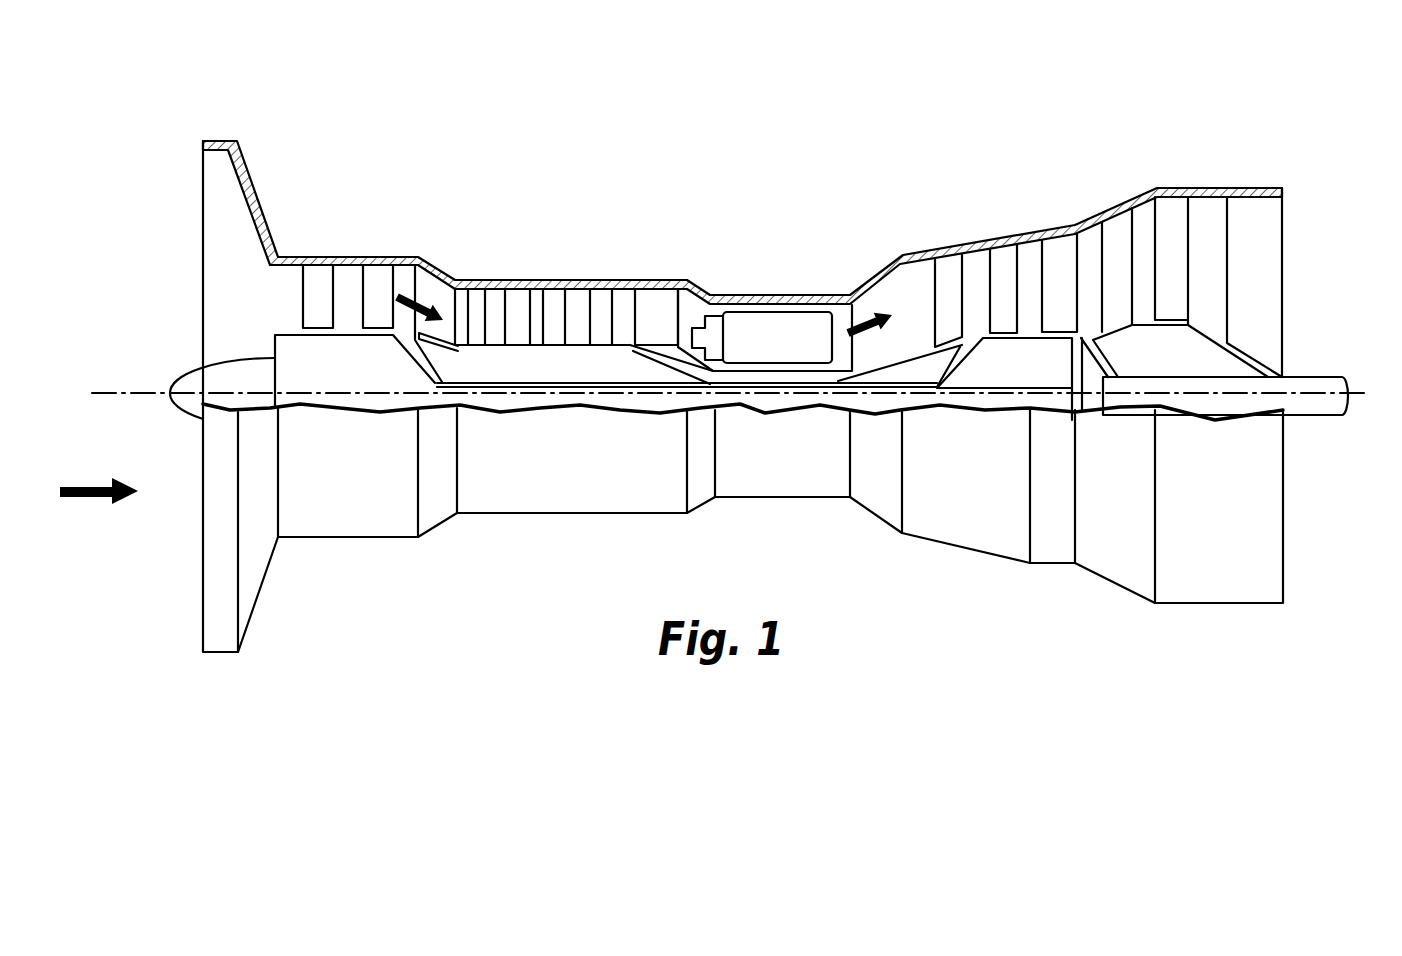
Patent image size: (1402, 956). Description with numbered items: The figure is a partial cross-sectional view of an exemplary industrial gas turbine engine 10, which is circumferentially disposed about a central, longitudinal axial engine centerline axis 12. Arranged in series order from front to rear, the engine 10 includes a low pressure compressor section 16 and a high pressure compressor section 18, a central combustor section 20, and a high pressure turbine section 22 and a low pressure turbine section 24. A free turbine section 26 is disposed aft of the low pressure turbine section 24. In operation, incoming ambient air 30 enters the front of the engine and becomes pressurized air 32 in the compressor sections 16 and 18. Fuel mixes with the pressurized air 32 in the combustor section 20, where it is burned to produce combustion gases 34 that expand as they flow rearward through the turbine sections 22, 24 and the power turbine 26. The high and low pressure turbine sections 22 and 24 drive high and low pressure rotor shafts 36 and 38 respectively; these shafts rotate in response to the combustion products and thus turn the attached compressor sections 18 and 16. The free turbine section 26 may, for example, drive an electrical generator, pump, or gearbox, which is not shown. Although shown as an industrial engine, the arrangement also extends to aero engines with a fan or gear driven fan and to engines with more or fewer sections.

The industrial gas turbine engine 10 is at (850, 134).
The axial engine centerline axis 12 is at (137, 392).
The low pressure compressor section 16 is at (339, 236).
The high pressure compressor section 18 is at (592, 248).
The central combustor section 20 is at (755, 322).
The high pressure turbine section 22 is at (960, 218).
The low pressure turbine section 24 is at (1065, 208).
The free turbine section 26 is at (1224, 180).
The incoming ambient air 30 is at (97, 484).
The pressurized air 32 is at (422, 315).
The combustion gases 34 is at (862, 318).
The high pressure rotor shaft 36 is at (772, 266).
The low pressure rotor shaft 38 is at (434, 370).